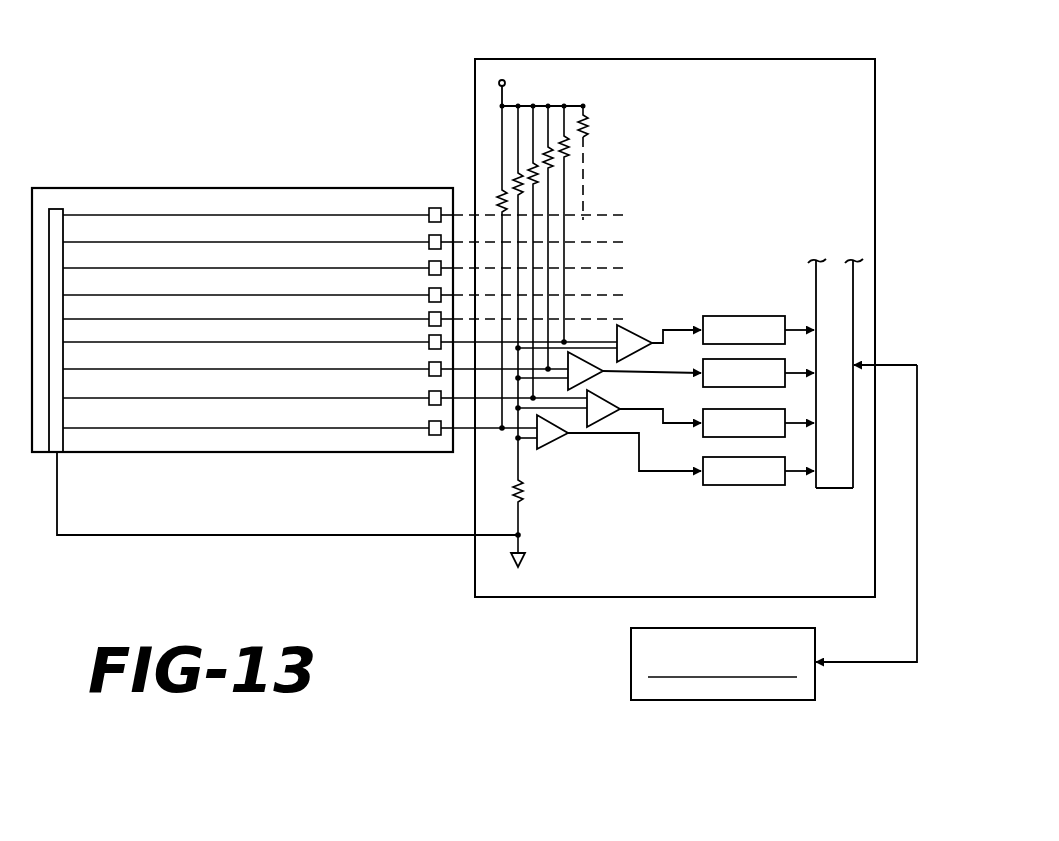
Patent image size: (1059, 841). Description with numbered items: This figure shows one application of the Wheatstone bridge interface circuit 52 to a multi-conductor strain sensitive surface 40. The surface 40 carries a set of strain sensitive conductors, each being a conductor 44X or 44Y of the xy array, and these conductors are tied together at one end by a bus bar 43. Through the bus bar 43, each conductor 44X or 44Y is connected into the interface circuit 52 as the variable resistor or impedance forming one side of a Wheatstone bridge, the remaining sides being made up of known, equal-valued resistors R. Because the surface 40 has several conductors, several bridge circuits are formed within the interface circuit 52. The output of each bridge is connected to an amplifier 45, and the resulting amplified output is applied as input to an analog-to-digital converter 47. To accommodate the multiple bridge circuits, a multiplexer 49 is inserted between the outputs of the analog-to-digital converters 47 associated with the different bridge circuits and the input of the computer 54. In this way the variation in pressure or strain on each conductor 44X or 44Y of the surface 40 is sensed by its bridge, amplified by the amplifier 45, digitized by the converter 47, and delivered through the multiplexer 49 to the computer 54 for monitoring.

The multi-conductor strain sensitive surface 40 is at (58, 208).
The bus bar 43 is at (58, 208).
The X conductor 44X is at (349, 212).
The Y conductor 44Y is at (369, 261).
The amplifier 45 is at (642, 333).
The analog-to-digital converter 47 is at (766, 316).
The multiplexer 49 is at (826, 480).
The Wheatstone bridge interface circuit 52 is at (664, 303).
The computer 54 is at (727, 701).